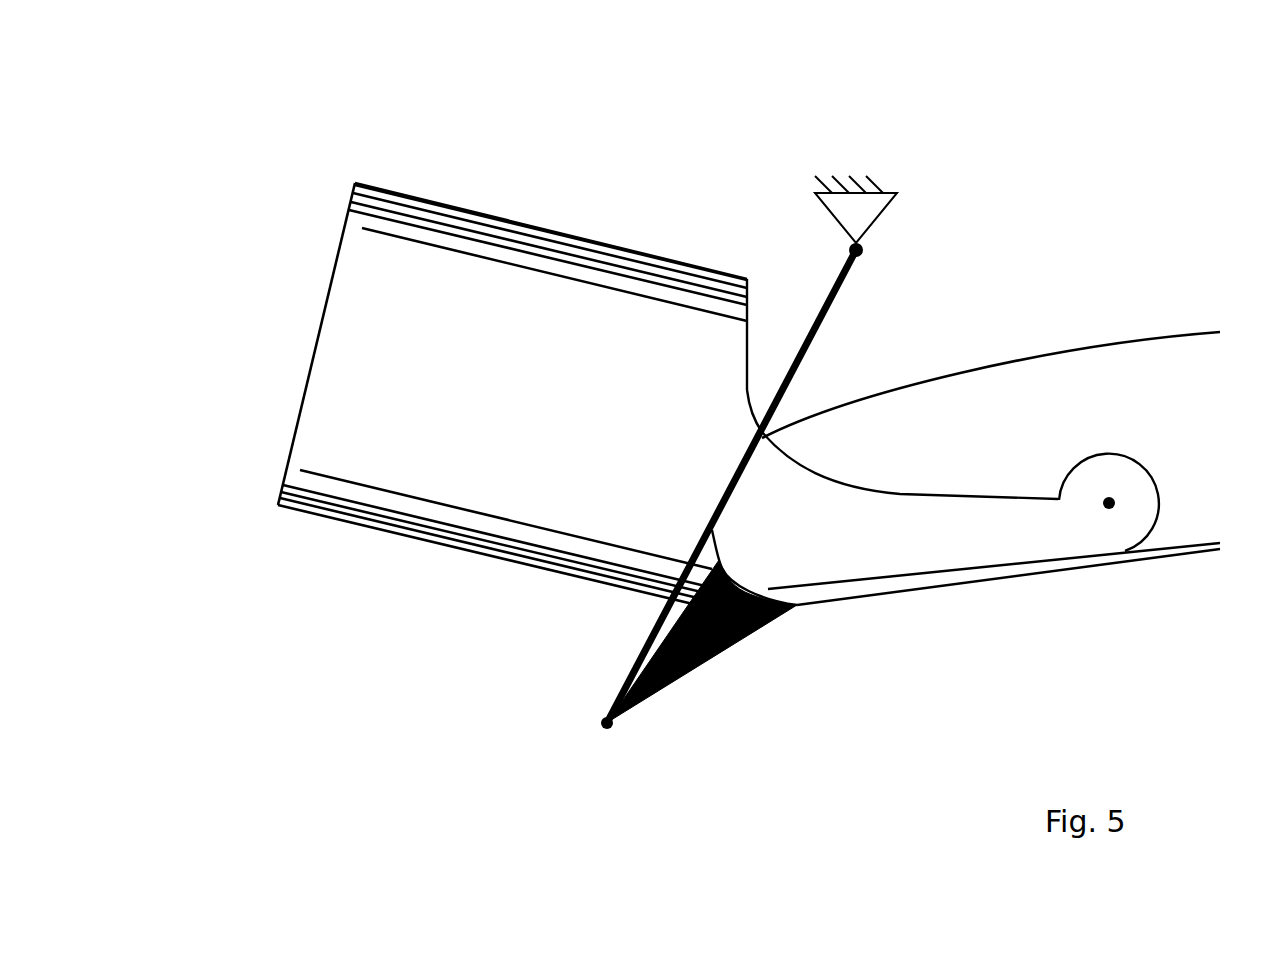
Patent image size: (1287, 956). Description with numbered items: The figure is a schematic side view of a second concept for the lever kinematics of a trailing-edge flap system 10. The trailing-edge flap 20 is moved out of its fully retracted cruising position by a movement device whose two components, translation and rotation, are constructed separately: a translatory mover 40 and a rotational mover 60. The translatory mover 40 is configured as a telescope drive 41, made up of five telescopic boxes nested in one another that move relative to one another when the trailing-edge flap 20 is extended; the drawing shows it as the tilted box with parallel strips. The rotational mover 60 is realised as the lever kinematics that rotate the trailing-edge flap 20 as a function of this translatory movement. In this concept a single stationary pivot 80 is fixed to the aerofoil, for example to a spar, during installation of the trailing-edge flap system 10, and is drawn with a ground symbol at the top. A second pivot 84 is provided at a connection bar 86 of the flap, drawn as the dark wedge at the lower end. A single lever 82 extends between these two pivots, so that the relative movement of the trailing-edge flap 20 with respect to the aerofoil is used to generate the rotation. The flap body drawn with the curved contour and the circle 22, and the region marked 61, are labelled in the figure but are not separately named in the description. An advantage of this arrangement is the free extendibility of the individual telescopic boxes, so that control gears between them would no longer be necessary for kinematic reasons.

The trailing-edge flap system 10 is at (1069, 178).
The trailing-edge flap 20 is at (1163, 377).
The pivot roller 22 is at (1112, 512).
The translatory mover 40 is at (232, 178).
The telescope drive 41 is at (514, 210).
The rotational mover 60 is at (758, 203).
The guide finger 61 is at (875, 363).
The stationary pivot 80 is at (864, 253).
The lever 82 is at (745, 460).
The second pivot 84 is at (603, 718).
The connection bar 86 is at (680, 683).